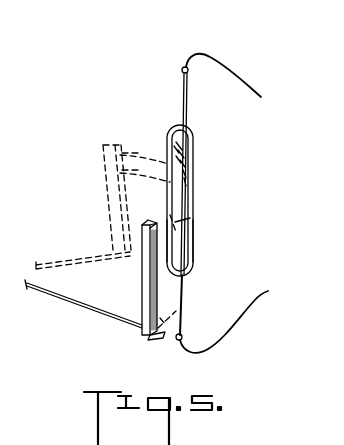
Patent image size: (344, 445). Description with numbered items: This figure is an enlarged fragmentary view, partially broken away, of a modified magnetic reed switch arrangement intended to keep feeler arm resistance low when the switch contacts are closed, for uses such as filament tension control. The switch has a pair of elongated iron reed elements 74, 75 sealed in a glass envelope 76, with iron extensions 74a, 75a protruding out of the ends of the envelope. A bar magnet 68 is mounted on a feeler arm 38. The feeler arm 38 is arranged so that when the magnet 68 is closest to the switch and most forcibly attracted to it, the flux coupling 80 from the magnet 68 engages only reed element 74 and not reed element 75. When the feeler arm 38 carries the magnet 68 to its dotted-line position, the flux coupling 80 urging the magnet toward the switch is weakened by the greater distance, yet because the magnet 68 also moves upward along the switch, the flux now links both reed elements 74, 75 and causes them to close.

The feeler arm 38 is at (82, 307).
The bar magnet 68 is at (142, 292).
The reed element 74 is at (194, 247).
The extension 74a is at (186, 298).
The reed element 75 is at (186, 150).
The extension 75a is at (188, 106).
The glass envelope 76 is at (194, 190).
The flux coupling 80 is at (156, 155).